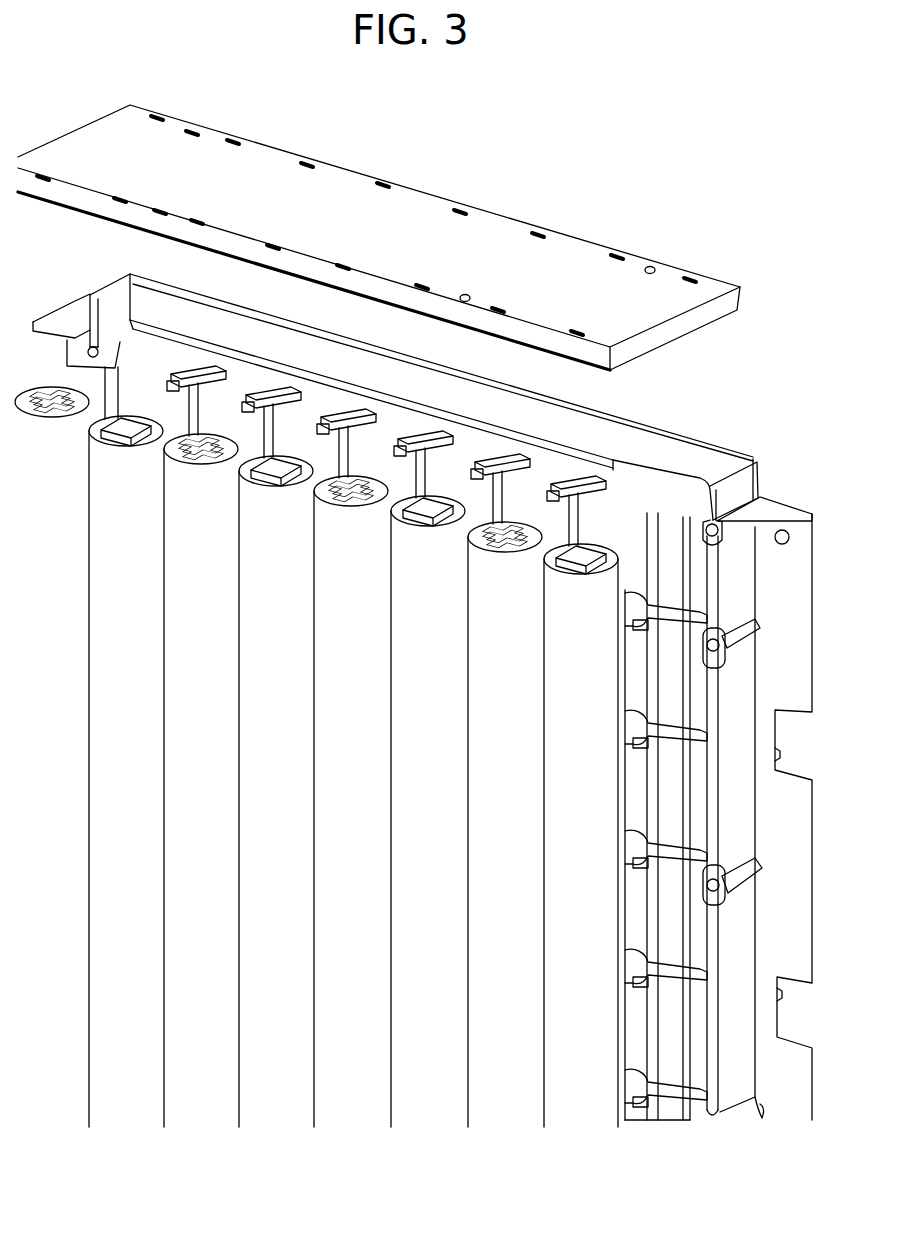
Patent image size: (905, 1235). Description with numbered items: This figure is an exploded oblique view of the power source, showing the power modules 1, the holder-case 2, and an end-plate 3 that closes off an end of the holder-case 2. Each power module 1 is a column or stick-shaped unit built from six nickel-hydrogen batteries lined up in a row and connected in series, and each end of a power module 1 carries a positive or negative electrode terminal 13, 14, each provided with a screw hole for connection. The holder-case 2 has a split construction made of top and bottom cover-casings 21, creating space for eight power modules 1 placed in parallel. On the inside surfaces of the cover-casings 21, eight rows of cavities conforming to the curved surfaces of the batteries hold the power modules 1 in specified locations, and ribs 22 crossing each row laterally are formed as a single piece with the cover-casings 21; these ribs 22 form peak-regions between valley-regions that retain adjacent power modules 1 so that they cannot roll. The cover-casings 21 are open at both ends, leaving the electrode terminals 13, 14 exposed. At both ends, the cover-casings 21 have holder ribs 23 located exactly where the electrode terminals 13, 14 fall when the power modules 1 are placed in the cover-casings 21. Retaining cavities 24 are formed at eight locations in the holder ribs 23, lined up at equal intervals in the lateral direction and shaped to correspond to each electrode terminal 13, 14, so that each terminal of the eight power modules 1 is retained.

The power module 1 is at (498, 782).
The holder-case 2 is at (752, 808).
The end-plate 3 is at (418, 215).
The electrode terminal 13 is at (565, 568).
The electrode terminal 14 is at (483, 543).
The cover-casing 21 is at (783, 690).
The rib 22 is at (673, 598).
The holder rib 23 is at (493, 447).
The retaining cavity 24 is at (607, 458).